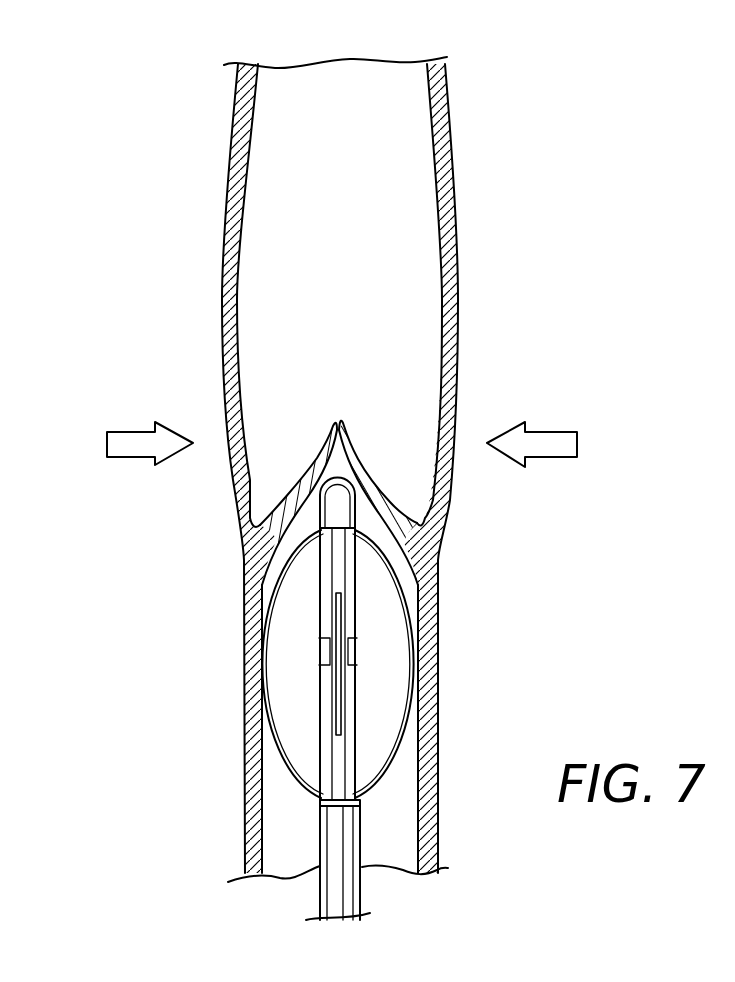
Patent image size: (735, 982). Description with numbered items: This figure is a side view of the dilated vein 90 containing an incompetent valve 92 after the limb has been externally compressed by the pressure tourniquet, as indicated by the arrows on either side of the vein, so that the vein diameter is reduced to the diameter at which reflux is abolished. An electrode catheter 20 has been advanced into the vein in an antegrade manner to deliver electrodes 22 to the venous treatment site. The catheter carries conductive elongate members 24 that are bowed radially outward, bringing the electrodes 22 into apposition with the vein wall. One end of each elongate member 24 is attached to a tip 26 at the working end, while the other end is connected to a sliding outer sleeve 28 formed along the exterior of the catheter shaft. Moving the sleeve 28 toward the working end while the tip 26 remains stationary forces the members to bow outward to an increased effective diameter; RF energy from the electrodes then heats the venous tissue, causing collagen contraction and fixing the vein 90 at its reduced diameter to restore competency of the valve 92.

The catheter 20 is at (328, 703).
The electrodes 22 is at (340, 657).
The conductive elongate members 24 is at (330, 748).
The tip 26 is at (337, 507).
The sliding outer sleeve 28 is at (347, 899).
The dilated vein 90 is at (457, 230).
The incompetent valve 92 is at (362, 476).